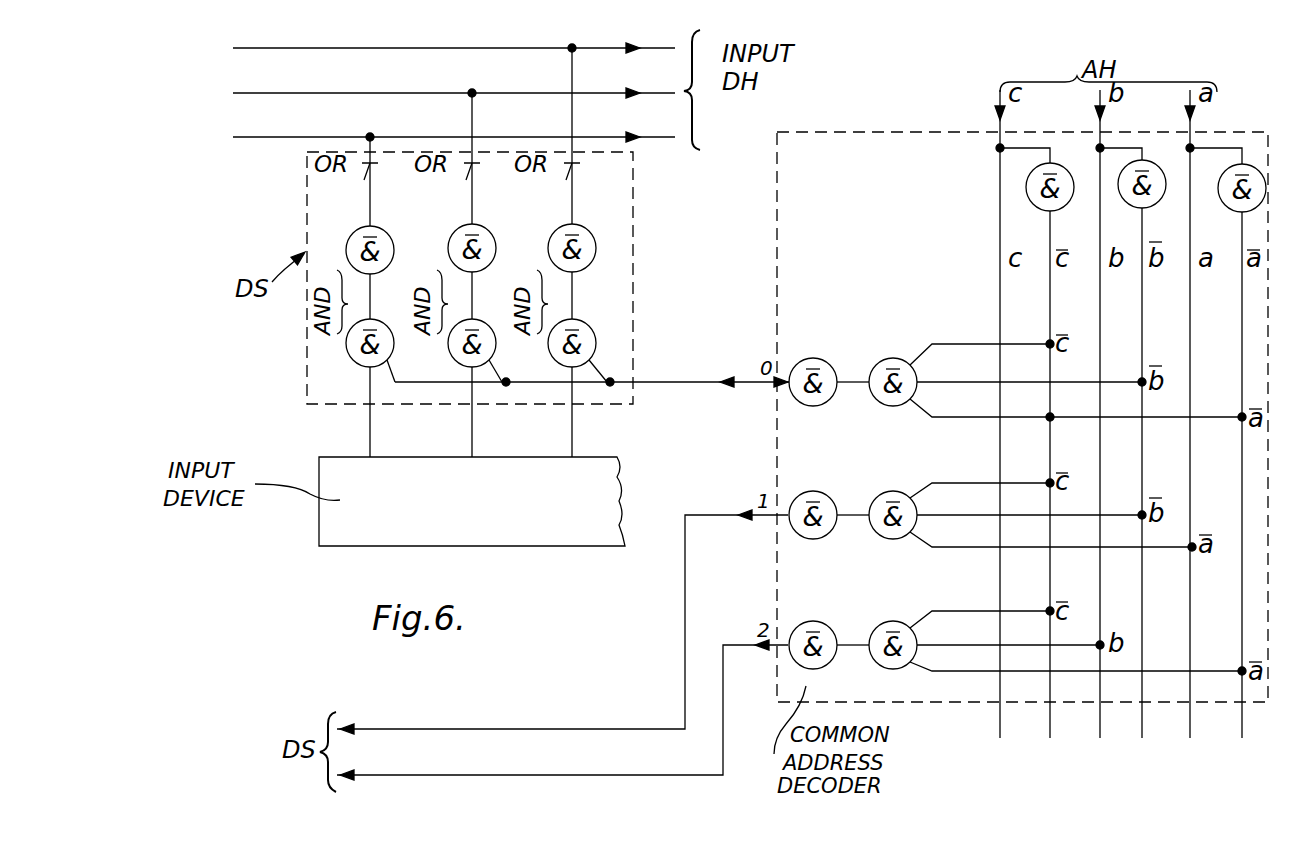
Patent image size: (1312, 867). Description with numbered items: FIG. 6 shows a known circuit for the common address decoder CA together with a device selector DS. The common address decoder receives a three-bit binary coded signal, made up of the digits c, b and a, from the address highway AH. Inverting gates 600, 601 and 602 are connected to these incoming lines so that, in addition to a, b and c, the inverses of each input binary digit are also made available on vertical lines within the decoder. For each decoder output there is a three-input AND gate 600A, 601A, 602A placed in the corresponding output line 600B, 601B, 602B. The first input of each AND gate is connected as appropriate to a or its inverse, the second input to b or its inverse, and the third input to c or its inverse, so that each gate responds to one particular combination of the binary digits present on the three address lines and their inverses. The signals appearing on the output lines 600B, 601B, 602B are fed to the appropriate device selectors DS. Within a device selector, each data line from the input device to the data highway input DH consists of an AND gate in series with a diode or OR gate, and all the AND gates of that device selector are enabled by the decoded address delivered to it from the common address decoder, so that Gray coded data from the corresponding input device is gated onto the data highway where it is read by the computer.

The inverting gate 600 is at (1058, 164).
The inverting gate 601 is at (1155, 162).
The inverting gate 602 is at (1260, 164).
The three-input AND gate 600A is at (899, 335).
The three-input AND gate 601A is at (896, 475).
The three-input AND gate 602A is at (901, 605).
The output line 600B is at (757, 350).
The output line 601B is at (744, 512).
The output line 602B is at (723, 677).